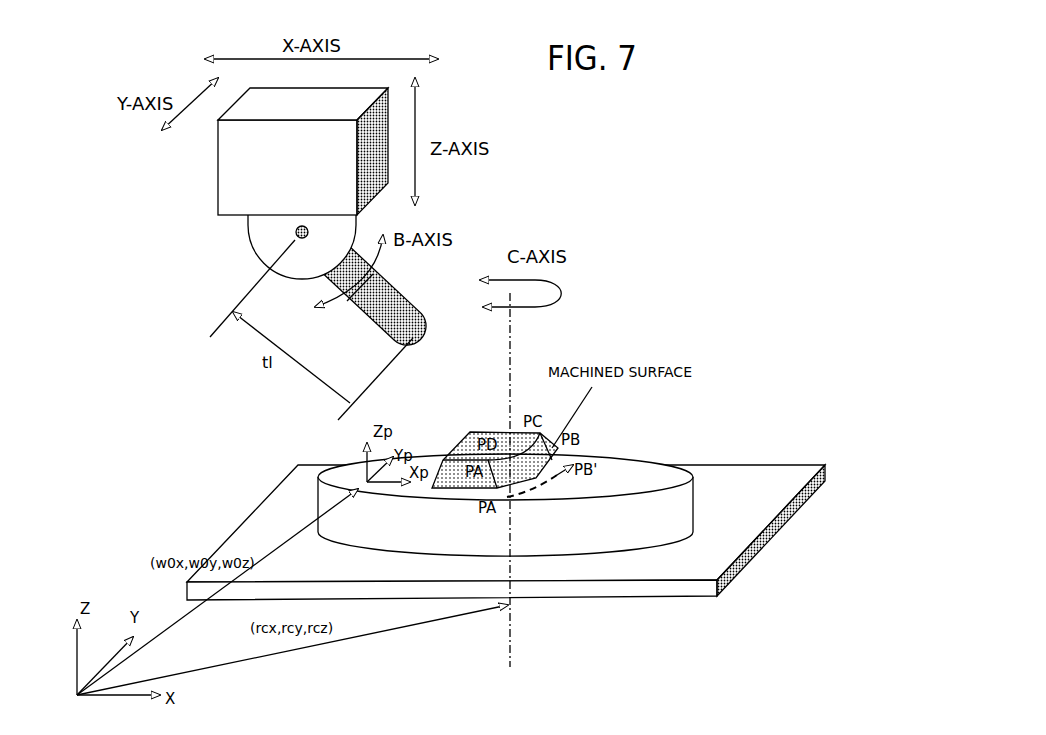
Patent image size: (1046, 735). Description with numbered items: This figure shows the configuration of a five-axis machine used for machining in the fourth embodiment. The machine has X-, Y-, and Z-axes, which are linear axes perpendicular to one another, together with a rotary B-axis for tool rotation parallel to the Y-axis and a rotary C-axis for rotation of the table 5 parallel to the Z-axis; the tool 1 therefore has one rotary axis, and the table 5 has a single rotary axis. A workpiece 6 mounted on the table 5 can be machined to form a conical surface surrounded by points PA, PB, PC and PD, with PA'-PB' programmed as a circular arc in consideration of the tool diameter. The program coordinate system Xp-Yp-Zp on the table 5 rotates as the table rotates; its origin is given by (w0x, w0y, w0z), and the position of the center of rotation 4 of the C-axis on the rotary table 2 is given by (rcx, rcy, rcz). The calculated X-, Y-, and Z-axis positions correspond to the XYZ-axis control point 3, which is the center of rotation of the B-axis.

The tool 1 is at (400, 297).
The rotary table 2 is at (632, 459).
The XYZ-axis control point 3 is at (293, 232).
The C-axis rotation center 4 is at (542, 490).
The table 5 is at (623, 535).
The workpiece 6 is at (484, 432).